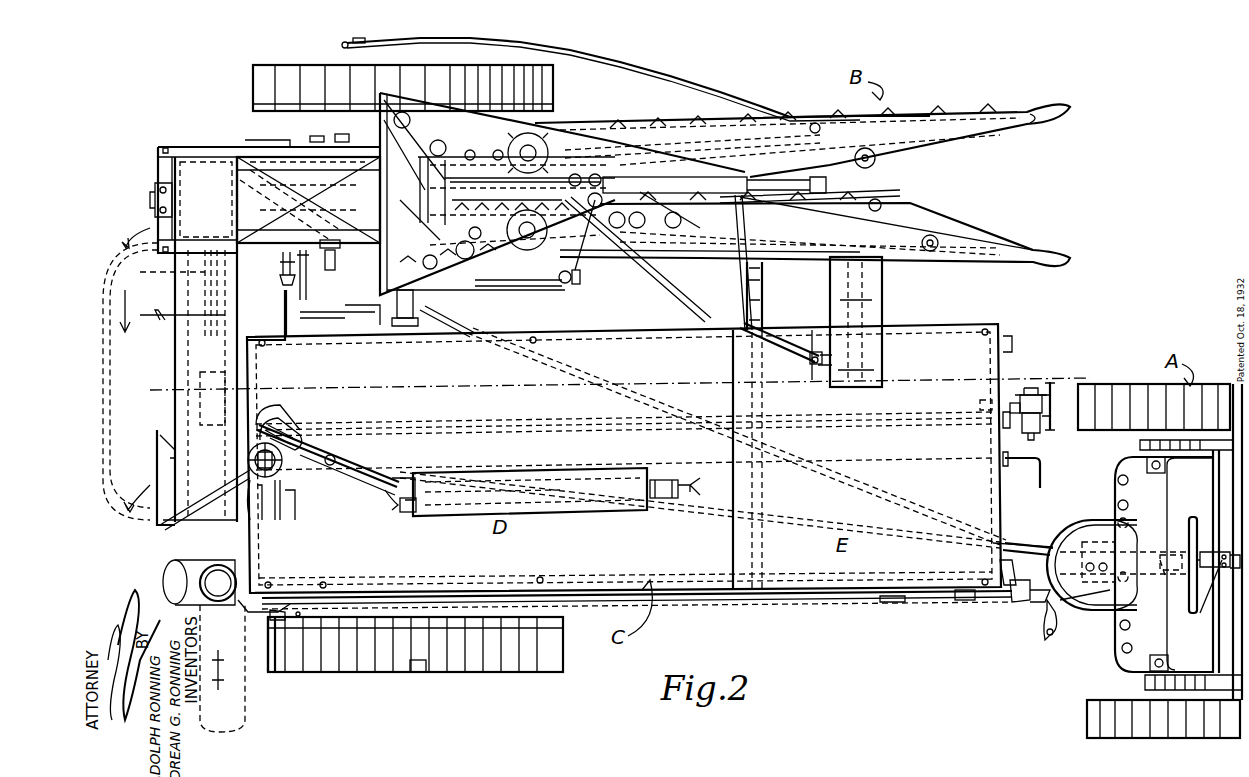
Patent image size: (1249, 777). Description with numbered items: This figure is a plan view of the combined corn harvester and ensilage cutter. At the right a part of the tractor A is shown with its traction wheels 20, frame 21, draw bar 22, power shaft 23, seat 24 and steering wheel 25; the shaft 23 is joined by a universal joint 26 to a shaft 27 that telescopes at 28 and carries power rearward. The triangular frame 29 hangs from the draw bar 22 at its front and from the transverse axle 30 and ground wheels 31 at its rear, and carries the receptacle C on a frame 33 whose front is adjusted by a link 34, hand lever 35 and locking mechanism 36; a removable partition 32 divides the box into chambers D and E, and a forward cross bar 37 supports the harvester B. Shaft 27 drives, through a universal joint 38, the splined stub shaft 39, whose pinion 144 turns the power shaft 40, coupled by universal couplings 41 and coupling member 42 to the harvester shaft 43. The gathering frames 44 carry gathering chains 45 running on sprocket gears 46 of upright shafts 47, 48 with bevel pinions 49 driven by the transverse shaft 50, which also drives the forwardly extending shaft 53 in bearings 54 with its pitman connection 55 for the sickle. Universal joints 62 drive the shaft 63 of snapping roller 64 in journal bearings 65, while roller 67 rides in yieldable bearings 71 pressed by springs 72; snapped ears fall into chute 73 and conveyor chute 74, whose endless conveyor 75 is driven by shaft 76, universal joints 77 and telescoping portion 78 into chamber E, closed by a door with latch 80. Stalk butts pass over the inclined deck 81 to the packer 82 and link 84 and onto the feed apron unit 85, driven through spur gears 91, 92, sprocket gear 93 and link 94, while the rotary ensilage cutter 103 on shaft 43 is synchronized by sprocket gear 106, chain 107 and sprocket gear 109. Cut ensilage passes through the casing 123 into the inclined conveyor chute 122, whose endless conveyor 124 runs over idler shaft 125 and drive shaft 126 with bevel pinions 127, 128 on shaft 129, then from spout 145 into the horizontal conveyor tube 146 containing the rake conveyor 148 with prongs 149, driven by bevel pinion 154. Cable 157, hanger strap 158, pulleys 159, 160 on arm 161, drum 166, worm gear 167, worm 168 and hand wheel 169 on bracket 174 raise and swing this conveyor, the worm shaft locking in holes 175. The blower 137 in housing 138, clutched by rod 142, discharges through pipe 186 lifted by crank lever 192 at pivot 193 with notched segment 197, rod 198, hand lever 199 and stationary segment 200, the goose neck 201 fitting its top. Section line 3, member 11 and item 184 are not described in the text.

The section line 3 is at (165, 358).
The frame member 11 is at (712, 310).
The traction wheels 20 is at (1130, 396).
The frame 21 is at (1226, 650).
The draw bar 22 is at (1135, 668).
The power shaft 23 is at (1200, 613).
The seat 24 is at (1082, 524).
The steering wheel 25 is at (1192, 517).
The universal joint 26 is at (1163, 575).
The shaft 27 is at (1027, 543).
The telescoping portion 28 is at (1164, 542).
The triangular frame 29 is at (470, 322).
The axle or shaft 30 is at (392, 322).
The ground wheels 31 is at (553, 90).
The removable partition 32 is at (733, 540).
The frame 33 is at (1012, 338).
The link 34 is at (1018, 600).
The hand lever 35 is at (1048, 640).
The locking mechanism 36 is at (1040, 600).
The cross bar 37 is at (763, 293).
The universal joint 38 is at (338, 456).
The splined stub shaft 39 is at (320, 452).
The power shaft 40 is at (287, 324).
The universal couplings 41 is at (285, 280).
The coupling member 42 is at (280, 262).
The shaft 43 is at (290, 140).
The gathering frames 44 is at (1035, 118).
The gathering chains 45 is at (937, 205).
The sprocket gears 46 is at (545, 150).
The upright shaft 47 is at (440, 142).
The upright shaft 48 is at (435, 270).
The bevel pinions 49 is at (410, 125).
The transverse shaft 50 is at (395, 160).
The forwardly extending shaft 53 is at (470, 260).
The bearings 54 is at (560, 287).
The pitman connection 55 is at (577, 286).
The universal joints 62 is at (590, 270).
The shaft 63 is at (600, 207).
The snapping roller 64 is at (677, 200).
The journal bearings 65 is at (867, 193).
The snapping roller 67 is at (690, 150).
The bearing 71 is at (610, 178).
The springs 72 is at (590, 176).
The chute 73 is at (742, 203).
The conveyor chute 74 is at (883, 290).
The endless conveyor 75 is at (880, 365).
The shaft 76 is at (665, 300).
The universal joints 77 is at (815, 366).
The telescoping portion 78 is at (794, 350).
The latch 80 is at (890, 602).
The inclined deck 81 is at (538, 140).
The packer 82 is at (470, 150).
The link 84 is at (498, 150).
The feed apron unit 85 is at (500, 160).
The spur gear 91 is at (300, 275).
The spur gear 92 is at (360, 308).
The sprocket gear 93 is at (332, 272).
The link 94 is at (330, 264).
The rotary ensilage cutter 103 is at (268, 170).
The sprocket gear 106 is at (342, 134).
The chain 107 is at (366, 134).
The sprocket gear 109 is at (318, 136).
The inclined conveyor chute 122 is at (190, 340).
The casing 123 is at (245, 190).
The endless conveyor 124 is at (151, 272).
The idler shaft 125 is at (150, 192).
The drive shaft 126 is at (168, 482).
The bevel pinion 127 is at (160, 525).
The bevel pinion 128 is at (278, 510).
The shaft 129 is at (262, 520).
The blower or fan 137 is at (222, 400).
The blower housing 138 is at (202, 575).
The rod 142 is at (1042, 460).
The pinion 144 is at (280, 450).
The apron or spout 145 is at (265, 520).
The conveyor tube 146 is at (460, 518).
The endless rake conveyor 148 is at (665, 480).
The prongs 149 is at (692, 484).
The bevel pinion 154 is at (293, 520).
The cable 157 is at (408, 482).
The hanger strap 158 is at (408, 514).
The pulley 159 is at (395, 512).
The pulley 160 is at (290, 426).
The arm 161 is at (360, 478).
The drum 166 is at (1040, 425).
The worm gear 167 is at (1015, 403).
The worm 168 is at (1036, 393).
The hand wheel 169 is at (548, 425).
The bracket 174 is at (1003, 424).
The holes 175 is at (1000, 402).
The chute 184 is at (118, 478).
The pipe or cylinder 186 is at (222, 624).
The crank lever 192 is at (222, 668).
The pivot 193 is at (280, 672).
The notched segment 197 is at (298, 618).
The rod 198 is at (686, 600).
The hand lever 199 is at (972, 602).
The stationary segment 200 is at (960, 582).
The goose neck or elbow 201 is at (168, 570).